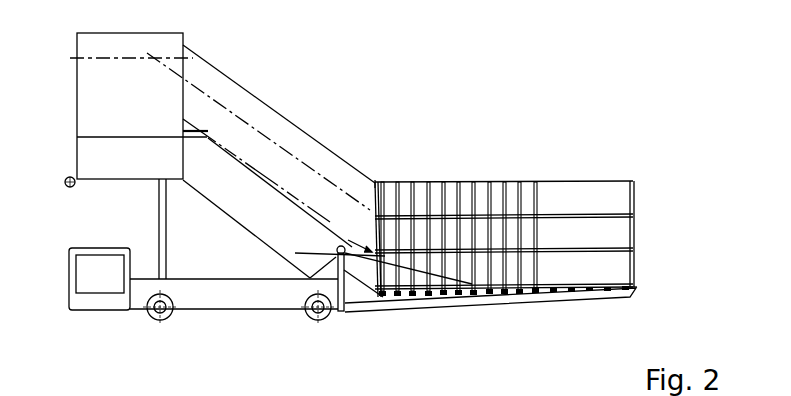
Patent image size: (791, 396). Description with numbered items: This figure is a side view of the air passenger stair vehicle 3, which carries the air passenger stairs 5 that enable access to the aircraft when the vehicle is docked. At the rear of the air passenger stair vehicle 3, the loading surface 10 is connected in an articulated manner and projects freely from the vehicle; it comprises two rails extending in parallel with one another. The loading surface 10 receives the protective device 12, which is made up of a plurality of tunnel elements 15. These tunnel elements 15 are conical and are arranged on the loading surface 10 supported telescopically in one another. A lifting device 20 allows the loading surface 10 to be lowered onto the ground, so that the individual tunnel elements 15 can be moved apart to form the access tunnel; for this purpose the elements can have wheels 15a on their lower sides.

The air passenger stair vehicle 3 is at (198, 300).
The air passenger stairs 5 is at (272, 127).
The loading surface 10 is at (545, 300).
The protective device 12 is at (500, 158).
The tunnel elements 15 is at (573, 185).
The wheels 15a is at (633, 288).
The lifting device 20 is at (343, 270).